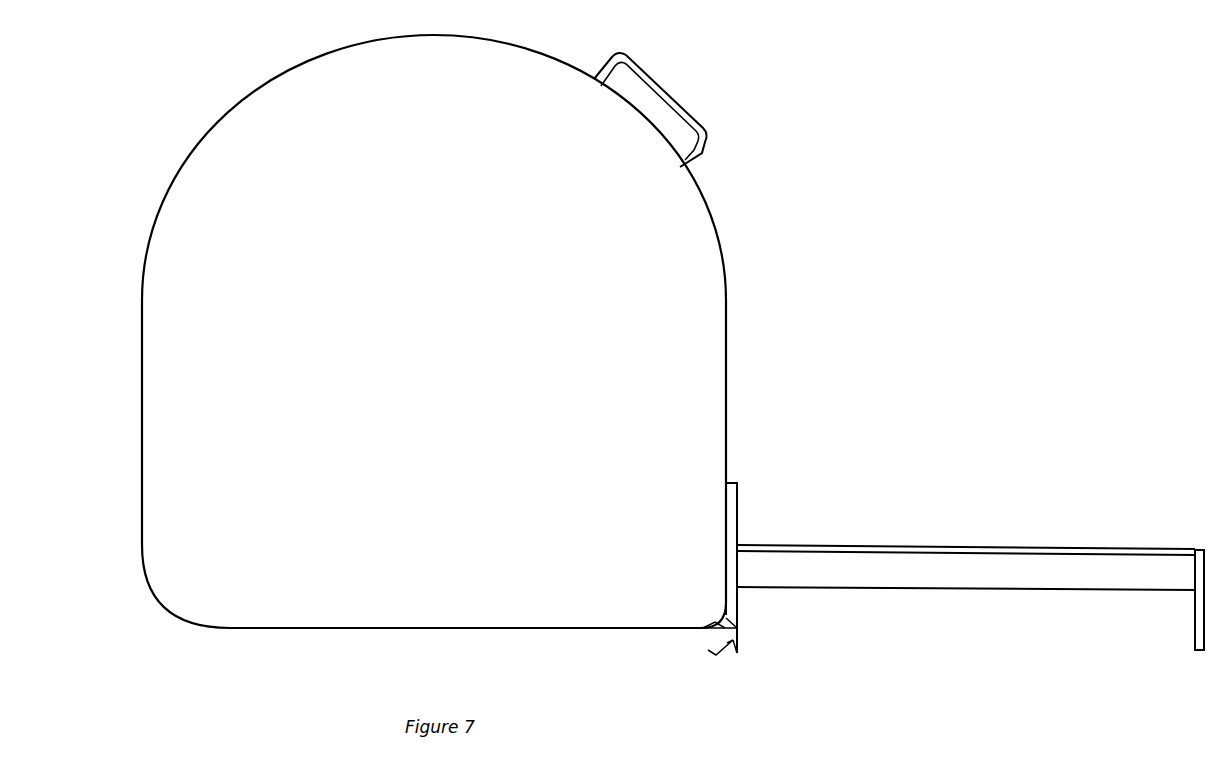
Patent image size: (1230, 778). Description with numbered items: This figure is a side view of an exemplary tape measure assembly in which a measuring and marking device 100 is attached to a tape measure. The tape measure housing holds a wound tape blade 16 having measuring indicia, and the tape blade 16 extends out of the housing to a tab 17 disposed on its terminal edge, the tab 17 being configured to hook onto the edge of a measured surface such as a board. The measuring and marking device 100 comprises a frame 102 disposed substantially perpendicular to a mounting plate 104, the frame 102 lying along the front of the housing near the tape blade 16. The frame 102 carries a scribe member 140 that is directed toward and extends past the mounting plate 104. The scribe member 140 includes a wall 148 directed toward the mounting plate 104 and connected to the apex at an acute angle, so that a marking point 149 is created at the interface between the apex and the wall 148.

The measuring and marking device 100 is at (738, 600).
The frame 102 is at (747, 493).
The tape blade 16 is at (1000, 548).
The tab 17 is at (1193, 625).
The mounting plate 104 is at (705, 632).
The wall 148 is at (727, 643).
The scribe member 140 is at (740, 656).
The marking point 149 is at (742, 652).